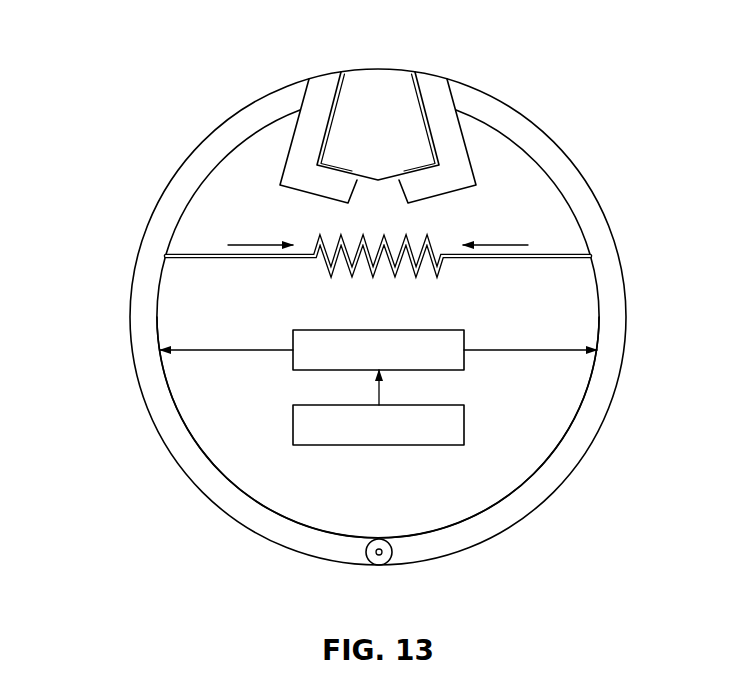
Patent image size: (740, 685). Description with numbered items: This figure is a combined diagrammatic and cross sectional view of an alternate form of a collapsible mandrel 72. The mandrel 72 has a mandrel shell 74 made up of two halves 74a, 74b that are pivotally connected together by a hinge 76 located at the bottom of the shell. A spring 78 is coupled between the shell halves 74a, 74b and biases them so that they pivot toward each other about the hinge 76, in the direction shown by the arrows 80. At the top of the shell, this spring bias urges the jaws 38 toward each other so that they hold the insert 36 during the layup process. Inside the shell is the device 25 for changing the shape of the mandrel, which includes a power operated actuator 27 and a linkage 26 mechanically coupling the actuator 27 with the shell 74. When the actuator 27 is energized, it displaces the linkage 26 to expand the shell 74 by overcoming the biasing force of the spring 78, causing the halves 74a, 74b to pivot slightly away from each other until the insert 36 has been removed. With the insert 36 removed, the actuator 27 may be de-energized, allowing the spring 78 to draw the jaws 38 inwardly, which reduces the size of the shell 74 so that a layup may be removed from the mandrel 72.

The device for changing the shape of the mandrel 25 is at (254, 412).
The linkage 26 is at (422, 330).
The actuator 27 is at (383, 445).
The insert 36 is at (381, 118).
The jaws 38 is at (308, 148).
The mandrel 72 is at (168, 143).
The mandrel shell 74 is at (595, 218).
The mandrel shell half 74a is at (161, 407).
The mandrel shell half 74b is at (582, 436).
The hinge 76 is at (379, 552).
The spring 78 is at (370, 272).
The arrows 80 is at (256, 245).